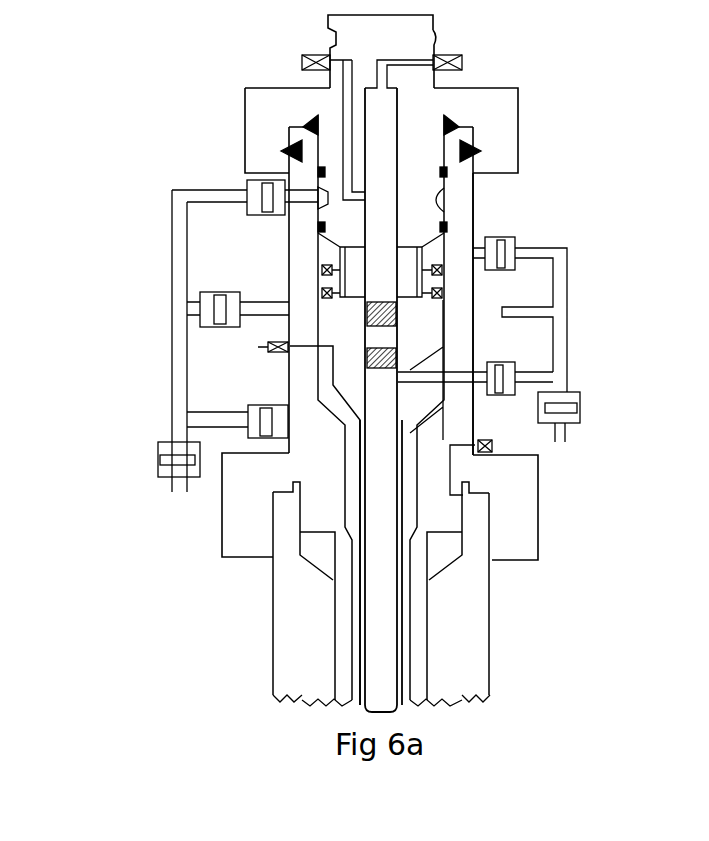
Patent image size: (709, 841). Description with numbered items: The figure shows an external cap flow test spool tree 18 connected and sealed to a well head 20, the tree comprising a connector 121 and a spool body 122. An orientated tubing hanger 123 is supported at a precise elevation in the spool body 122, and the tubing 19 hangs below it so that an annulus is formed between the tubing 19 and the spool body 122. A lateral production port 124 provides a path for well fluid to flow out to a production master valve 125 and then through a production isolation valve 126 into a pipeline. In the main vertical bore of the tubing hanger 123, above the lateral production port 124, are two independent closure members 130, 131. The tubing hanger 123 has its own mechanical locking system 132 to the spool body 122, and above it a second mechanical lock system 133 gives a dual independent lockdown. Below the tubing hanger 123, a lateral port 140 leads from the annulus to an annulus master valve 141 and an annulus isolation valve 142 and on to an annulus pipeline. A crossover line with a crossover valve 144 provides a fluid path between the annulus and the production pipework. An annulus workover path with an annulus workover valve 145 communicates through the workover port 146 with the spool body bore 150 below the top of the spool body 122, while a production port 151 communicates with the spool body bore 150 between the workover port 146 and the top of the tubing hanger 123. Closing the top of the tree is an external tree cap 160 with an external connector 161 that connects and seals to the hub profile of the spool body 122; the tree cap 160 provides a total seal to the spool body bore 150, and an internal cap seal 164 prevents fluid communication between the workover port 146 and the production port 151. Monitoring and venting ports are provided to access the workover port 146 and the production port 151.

The spool tree 18 is at (118, 348).
The tubing 19 is at (397, 666).
The well head 20 is at (273, 617).
The connector 121 is at (222, 527).
The spool body 122 is at (473, 190).
The orientated tubing hanger 123 is at (430, 318).
The lateral production port 124 is at (430, 356).
The production master valve 125 is at (518, 365).
The production isolation valve 126 is at (578, 425).
The closure member 130 is at (368, 312).
The closure member 131 is at (368, 353).
The mechanical locking system 132 is at (445, 292).
The second mechanical lock system 133 is at (322, 262).
The lateral port 140 is at (297, 400).
The annulus master valve 141 is at (248, 412).
The annulus isolation valve 142 is at (158, 458).
The crossover valve 144 is at (187, 293).
The annulus workover valve 145 is at (262, 183).
The workover port 146 is at (318, 235).
The spool body bore 150 is at (320, 189).
The production port 151 is at (478, 236).
The external tree cap 160 is at (505, 55).
The external connector 161 is at (518, 115).
The internal cap seal 164 is at (447, 224).